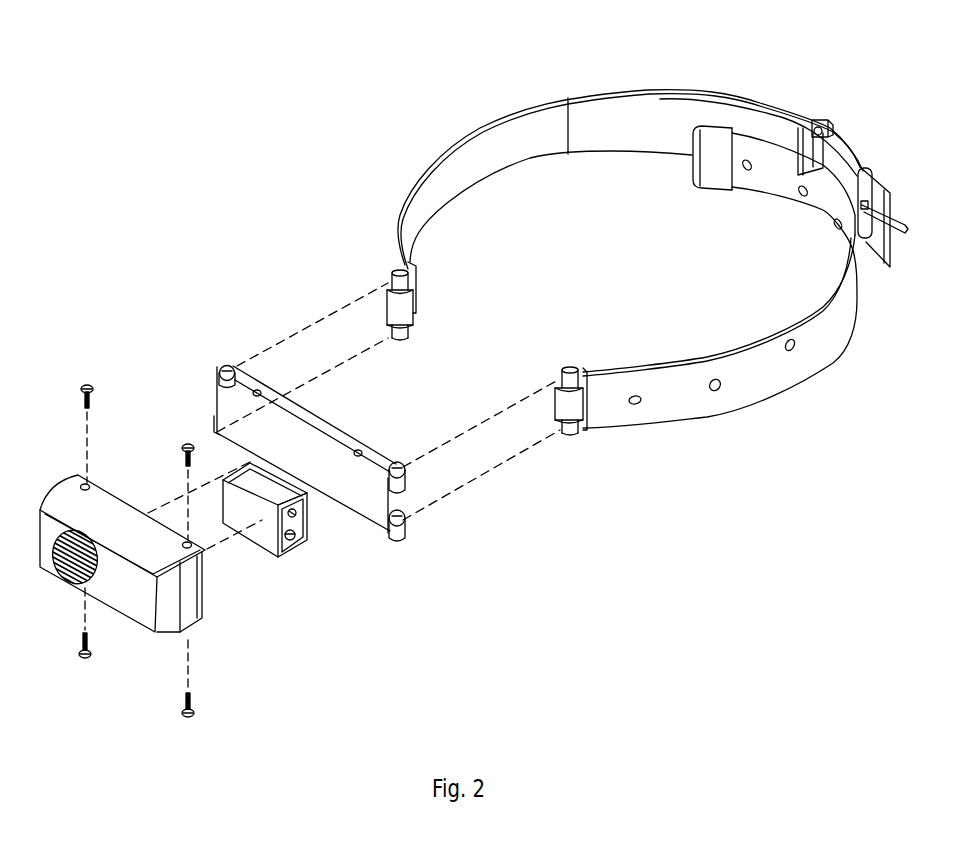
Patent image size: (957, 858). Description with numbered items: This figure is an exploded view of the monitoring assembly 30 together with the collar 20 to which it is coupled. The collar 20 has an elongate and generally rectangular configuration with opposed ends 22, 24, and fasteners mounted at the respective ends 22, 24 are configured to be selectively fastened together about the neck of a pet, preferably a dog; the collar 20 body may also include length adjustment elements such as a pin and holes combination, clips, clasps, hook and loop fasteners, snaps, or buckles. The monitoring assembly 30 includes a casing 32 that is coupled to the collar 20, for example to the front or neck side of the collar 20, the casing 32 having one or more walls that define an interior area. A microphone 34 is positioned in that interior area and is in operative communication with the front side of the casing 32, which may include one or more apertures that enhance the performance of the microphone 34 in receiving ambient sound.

The collar 20 is at (520, 86).
The end of collar 22 is at (699, 158).
The end of collar 24 is at (859, 165).
The monitoring assembly 30 is at (309, 515).
The casing 32 is at (135, 598).
The microphone 34 is at (293, 522).